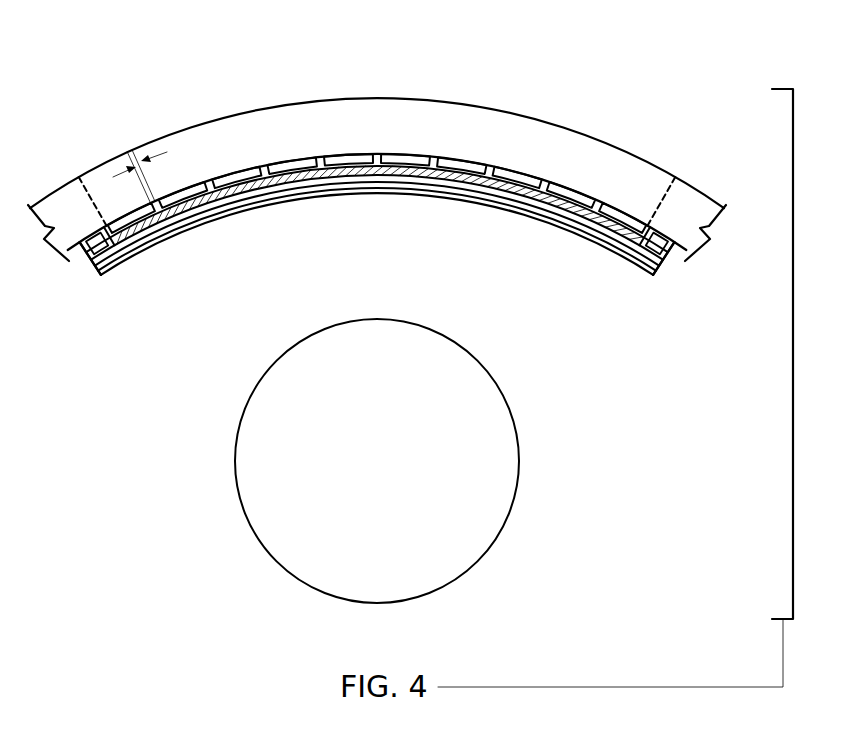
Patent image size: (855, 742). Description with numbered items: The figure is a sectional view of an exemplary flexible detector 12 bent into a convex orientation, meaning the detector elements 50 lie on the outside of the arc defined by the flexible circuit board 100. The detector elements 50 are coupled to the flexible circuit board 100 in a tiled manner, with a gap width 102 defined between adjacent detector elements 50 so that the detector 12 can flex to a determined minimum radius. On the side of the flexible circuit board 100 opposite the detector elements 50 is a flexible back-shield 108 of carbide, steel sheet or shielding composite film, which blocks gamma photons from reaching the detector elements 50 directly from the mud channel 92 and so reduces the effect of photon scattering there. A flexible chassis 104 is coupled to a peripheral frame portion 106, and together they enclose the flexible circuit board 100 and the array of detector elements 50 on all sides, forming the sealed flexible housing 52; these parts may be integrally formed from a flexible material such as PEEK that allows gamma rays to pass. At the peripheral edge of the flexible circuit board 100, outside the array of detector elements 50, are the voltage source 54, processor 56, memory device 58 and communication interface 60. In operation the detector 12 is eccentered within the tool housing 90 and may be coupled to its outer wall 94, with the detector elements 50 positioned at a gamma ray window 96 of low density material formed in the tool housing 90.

The detector 12 is at (631, 51).
The tool housing 90 is at (524, 118).
The mud channel 92 is at (500, 388).
The outer wall 94 is at (66, 205).
The gamma ray window 96 is at (638, 186).
The gap width 102 is at (135, 150).
The flexible chassis 104 is at (263, 163).
The flexible back-shield 108 is at (238, 217).
The flexible circuit board 100 is at (180, 233).
The detector elements 50 is at (130, 213).
The flexible housing 52 is at (700, 287).
The peripheral frame portion 106 is at (386, 290).
The voltage source 54 is at (80, 262).
The processor 56 is at (670, 270).
The memory device 58 is at (90, 258).
The communication interface 60 is at (663, 258).